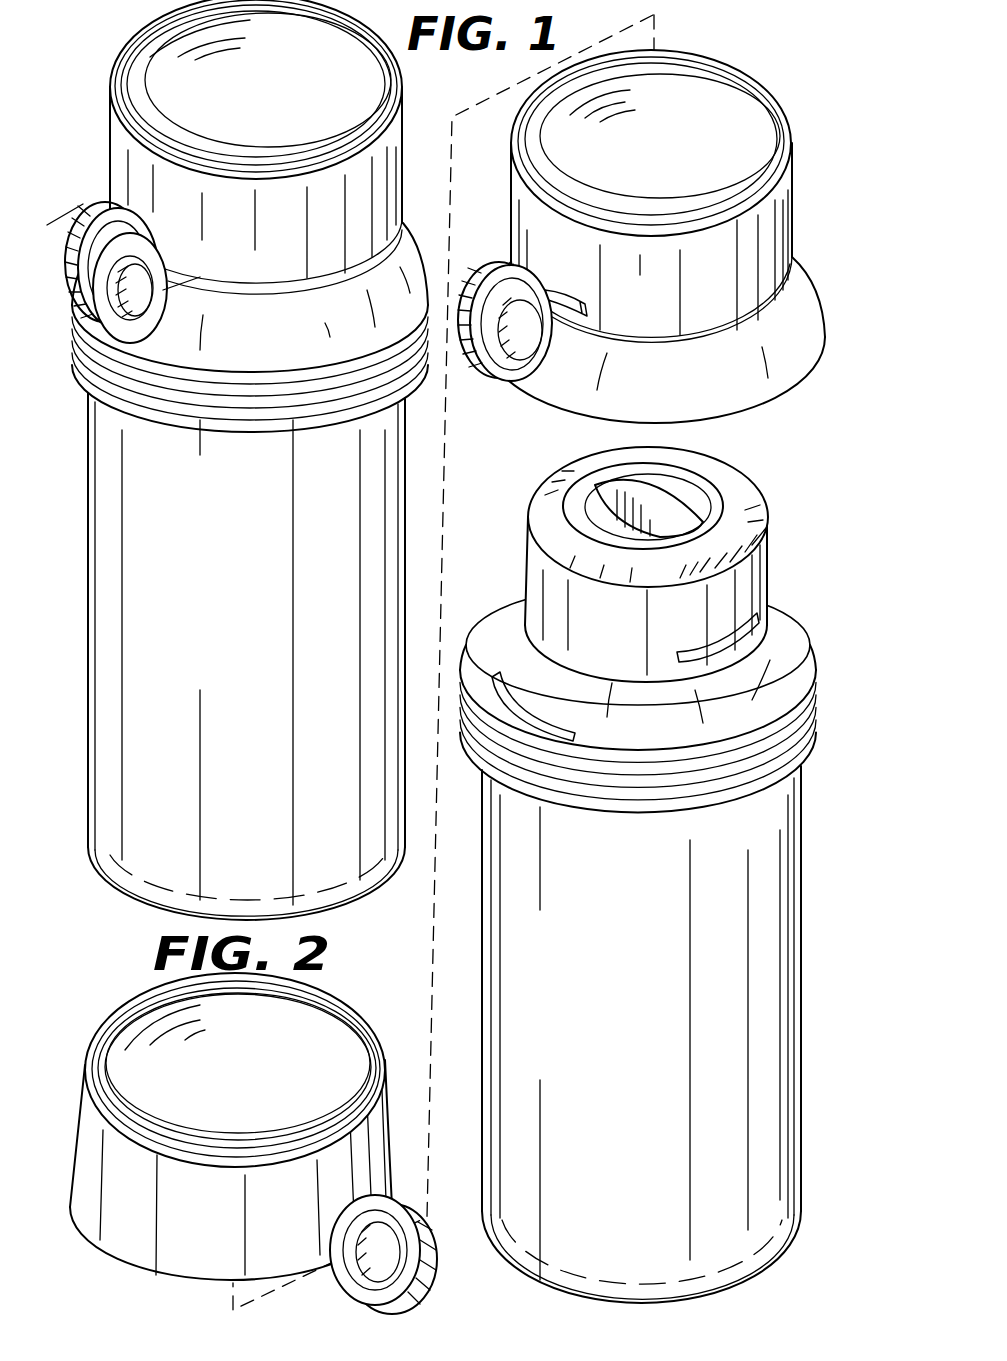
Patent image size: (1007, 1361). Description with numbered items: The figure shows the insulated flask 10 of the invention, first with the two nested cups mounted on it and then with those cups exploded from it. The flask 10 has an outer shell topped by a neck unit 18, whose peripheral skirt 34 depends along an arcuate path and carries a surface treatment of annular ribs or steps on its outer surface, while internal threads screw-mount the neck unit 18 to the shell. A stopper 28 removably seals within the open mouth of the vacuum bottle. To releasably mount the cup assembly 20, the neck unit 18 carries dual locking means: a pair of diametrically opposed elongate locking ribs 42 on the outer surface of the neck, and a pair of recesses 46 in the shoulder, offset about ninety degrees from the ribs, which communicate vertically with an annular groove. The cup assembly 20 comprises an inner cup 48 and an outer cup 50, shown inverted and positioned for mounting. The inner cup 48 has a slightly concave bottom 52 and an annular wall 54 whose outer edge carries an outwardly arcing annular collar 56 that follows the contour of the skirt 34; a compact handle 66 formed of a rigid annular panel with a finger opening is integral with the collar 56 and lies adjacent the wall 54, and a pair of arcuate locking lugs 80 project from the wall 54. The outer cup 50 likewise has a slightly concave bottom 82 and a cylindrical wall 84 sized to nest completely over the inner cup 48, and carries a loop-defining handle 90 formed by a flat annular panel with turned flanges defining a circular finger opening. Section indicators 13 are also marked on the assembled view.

In FIG. 1, the insulated flask 10 is at (80, 512).
In FIG. 1, the section line indicator 13 is at (83, 204).
In FIG. 1, the neck unit 18 is at (775, 548).
In FIG. 1, the cup assembly 20 is at (410, 128).
In FIG. 1, the stopper 28 is at (692, 498).
In FIG. 1, the peripheral skirt 34 is at (280, 433).
In FIG. 1, the locking ribs 42 is at (700, 640).
In FIG. 1, the recesses 46 is at (522, 707).
In FIG. 1, the inner cup 48 is at (811, 143).
In FIG. 2, the outer cup 50 is at (110, 1000).
In FIG. 1, the bottom 52 is at (704, 82).
In FIG. 1, the annular wall 54 is at (786, 236).
In FIG. 1, the annular collar 56 is at (285, 317).
In FIG. 1, the handle 66 is at (72, 283).
In FIG. 1, the locking lugs 80 is at (578, 310).
In FIG. 2, the bottom 82 is at (323, 1027).
In FIG. 2, the cylindrical wall 84 is at (85, 1193).
In FIG. 1, the handle 90 is at (153, 320).
In FIG. 2, the handle 90 is at (440, 1251).